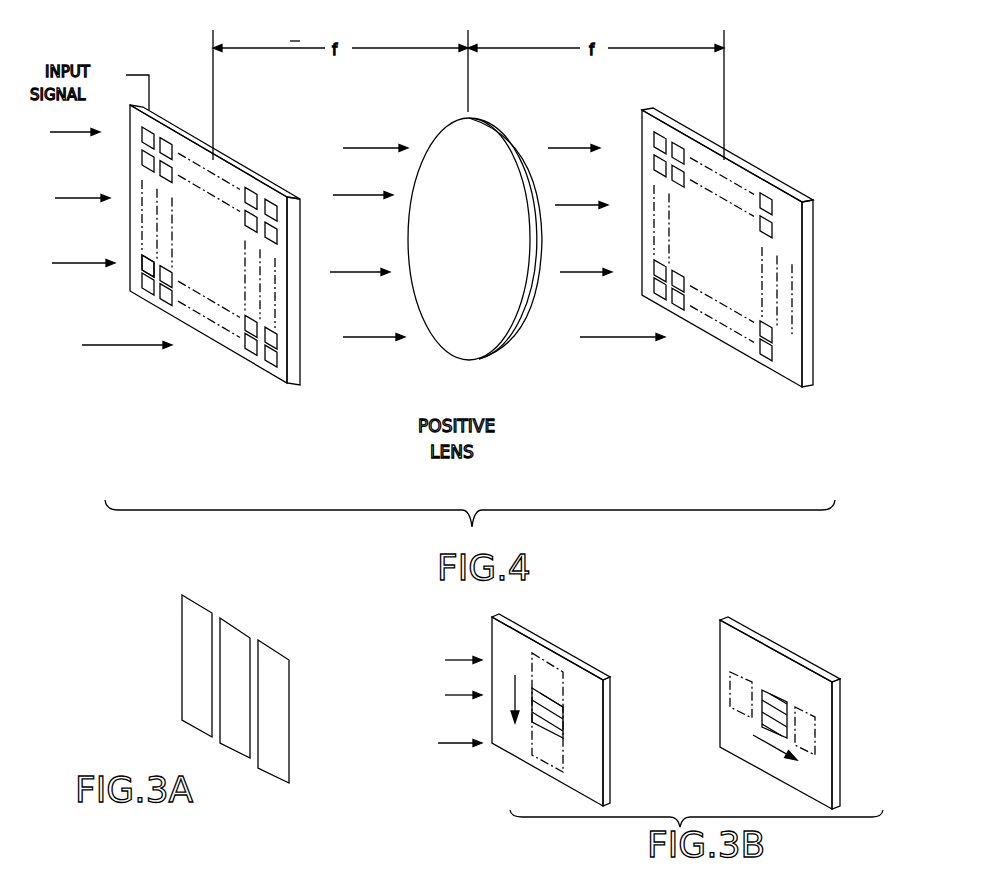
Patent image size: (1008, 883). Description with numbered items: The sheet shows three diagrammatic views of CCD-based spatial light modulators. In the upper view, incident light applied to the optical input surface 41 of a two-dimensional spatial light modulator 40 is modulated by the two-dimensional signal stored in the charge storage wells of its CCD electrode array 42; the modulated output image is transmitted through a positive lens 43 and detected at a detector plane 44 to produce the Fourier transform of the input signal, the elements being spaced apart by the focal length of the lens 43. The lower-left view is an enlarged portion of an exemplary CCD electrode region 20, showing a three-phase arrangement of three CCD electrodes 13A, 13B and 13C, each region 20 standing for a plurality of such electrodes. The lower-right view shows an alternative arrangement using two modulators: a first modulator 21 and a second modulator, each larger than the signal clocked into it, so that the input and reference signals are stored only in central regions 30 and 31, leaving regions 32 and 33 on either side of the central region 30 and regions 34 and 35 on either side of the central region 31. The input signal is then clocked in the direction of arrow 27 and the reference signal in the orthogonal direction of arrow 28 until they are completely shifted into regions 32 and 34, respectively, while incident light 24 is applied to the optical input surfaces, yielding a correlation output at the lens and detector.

In FIG. 4, the two-dimensional spatial light modulator 40 is at (198, 283).
In FIG. 4, the optical input surface 41 is at (140, 282).
In FIG. 4, the CCD electrode array 42 is at (217, 242).
In FIG. 4, the positive lens 43 is at (506, 134).
In FIG. 4, the detector plane 44 is at (770, 175).
In FIG. 3A, the CCD electrode 13A is at (195, 606).
In FIG. 3A, the CCD electrode 13B is at (236, 634).
In FIG. 3A, the CCD electrode 13C is at (270, 657).
In FIG. 3A, the CCD electrode region 20 is at (170, 667).
In FIG. 3B, the modulator 21 is at (604, 767).
In FIG. 3B, the incident light 24 is at (838, 791).
In FIG. 3B, the arrow 27 is at (512, 700).
In FIG. 3B, the arrow 28 is at (770, 749).
In FIG. 3B, the central region 30 is at (555, 729).
In FIG. 3B, the central region 31 is at (781, 683).
In FIG. 3B, the region 32 is at (548, 678).
In FIG. 3B, the region 33 is at (562, 770).
In FIG. 3B, the region 34 is at (805, 719).
In FIG. 3B, the region 35 is at (742, 681).